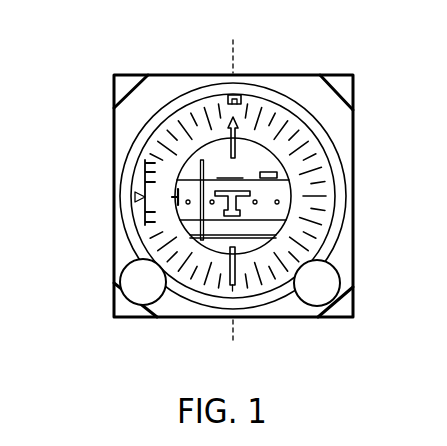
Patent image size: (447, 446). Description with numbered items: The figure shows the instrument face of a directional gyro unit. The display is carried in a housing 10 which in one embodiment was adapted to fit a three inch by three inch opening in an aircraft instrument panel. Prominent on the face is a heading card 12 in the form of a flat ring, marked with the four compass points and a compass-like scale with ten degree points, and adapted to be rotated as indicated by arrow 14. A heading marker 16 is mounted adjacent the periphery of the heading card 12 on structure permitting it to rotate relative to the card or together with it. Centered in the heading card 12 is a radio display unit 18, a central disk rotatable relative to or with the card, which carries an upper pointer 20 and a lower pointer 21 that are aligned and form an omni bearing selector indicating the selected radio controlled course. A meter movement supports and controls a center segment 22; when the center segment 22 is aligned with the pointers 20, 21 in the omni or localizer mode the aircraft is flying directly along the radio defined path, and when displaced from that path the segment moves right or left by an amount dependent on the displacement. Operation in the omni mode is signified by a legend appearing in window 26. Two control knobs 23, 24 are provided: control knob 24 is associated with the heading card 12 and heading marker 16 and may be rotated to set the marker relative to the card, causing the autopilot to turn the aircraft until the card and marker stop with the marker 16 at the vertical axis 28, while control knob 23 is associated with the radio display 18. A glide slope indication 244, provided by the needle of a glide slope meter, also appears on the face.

The housing 10 is at (354, 122).
The heading card 12 is at (332, 219).
The arrow 14 is at (77, 173).
The heading marker 16 is at (231, 93).
The radio display unit 18 is at (231, 196).
The upper pointer 20 is at (246, 136).
The lower pointer 21 is at (238, 263).
The center segment 22 is at (200, 172).
The control knob 23 is at (153, 305).
The control knob 24 is at (317, 302).
The window 26 is at (279, 176).
The vertical axis 28 is at (236, 53).
The glide slope indication 244 is at (113, 245).